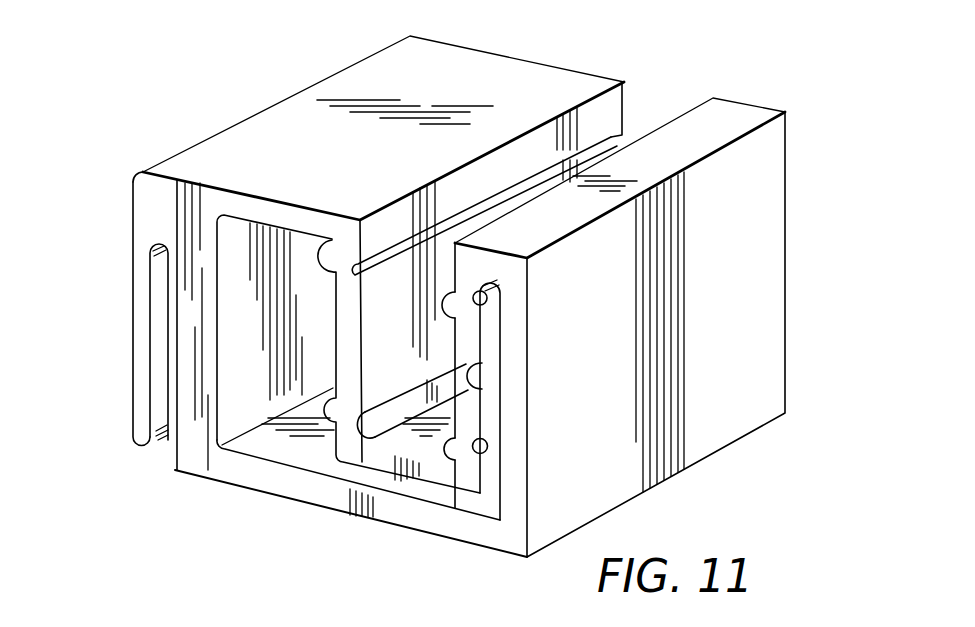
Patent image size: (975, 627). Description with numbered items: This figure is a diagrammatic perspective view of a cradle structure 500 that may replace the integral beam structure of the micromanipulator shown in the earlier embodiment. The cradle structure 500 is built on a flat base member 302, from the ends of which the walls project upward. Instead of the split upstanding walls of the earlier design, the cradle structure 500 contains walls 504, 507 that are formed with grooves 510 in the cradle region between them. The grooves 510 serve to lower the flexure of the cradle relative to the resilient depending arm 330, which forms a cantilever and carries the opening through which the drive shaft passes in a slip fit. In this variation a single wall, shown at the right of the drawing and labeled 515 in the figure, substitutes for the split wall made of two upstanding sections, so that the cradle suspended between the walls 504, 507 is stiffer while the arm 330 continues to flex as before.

The cradle structure 500 is at (210, 80).
The wall 504 is at (620, 150).
The block 515 is at (760, 203).
The grooves 510 is at (392, 258).
The resilient depending arm 330 is at (133, 312).
The wall 507 is at (482, 384).
The flat base member 302 is at (400, 513).